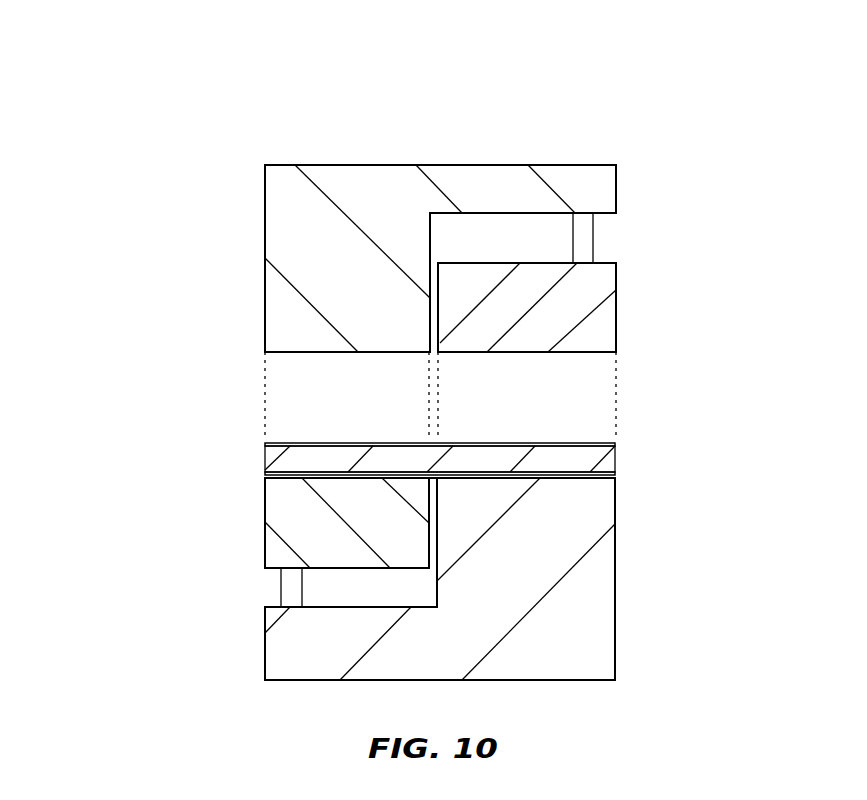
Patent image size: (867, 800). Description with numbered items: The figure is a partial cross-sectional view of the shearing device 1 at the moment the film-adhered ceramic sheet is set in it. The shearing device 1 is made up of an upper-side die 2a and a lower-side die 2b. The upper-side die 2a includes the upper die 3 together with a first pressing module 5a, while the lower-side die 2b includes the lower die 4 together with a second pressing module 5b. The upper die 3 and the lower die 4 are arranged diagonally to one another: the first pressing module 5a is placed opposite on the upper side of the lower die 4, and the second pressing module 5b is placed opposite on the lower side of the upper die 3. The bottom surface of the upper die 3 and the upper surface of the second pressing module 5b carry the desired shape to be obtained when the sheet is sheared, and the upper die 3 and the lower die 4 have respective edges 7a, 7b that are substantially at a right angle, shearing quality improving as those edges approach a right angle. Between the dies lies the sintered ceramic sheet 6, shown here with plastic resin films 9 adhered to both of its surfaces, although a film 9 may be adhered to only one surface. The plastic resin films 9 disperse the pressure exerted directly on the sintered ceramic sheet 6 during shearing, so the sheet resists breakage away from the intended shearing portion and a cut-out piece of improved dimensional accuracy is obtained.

The shearing device 1 is at (217, 127).
The upper-side die 2a is at (635, 193).
The lower-side die 2b is at (220, 523).
The upper die 3 is at (607, 280).
The lower die 4 is at (275, 551).
The first pressing module 5a is at (281, 247).
The second pressing module 5b is at (602, 605).
The sintered ceramic sheet 6 is at (600, 456).
The edge of the upper die 7a is at (441, 350).
The edge of the lower die 7b is at (430, 476).
The plastic resin film 9 is at (617, 446).